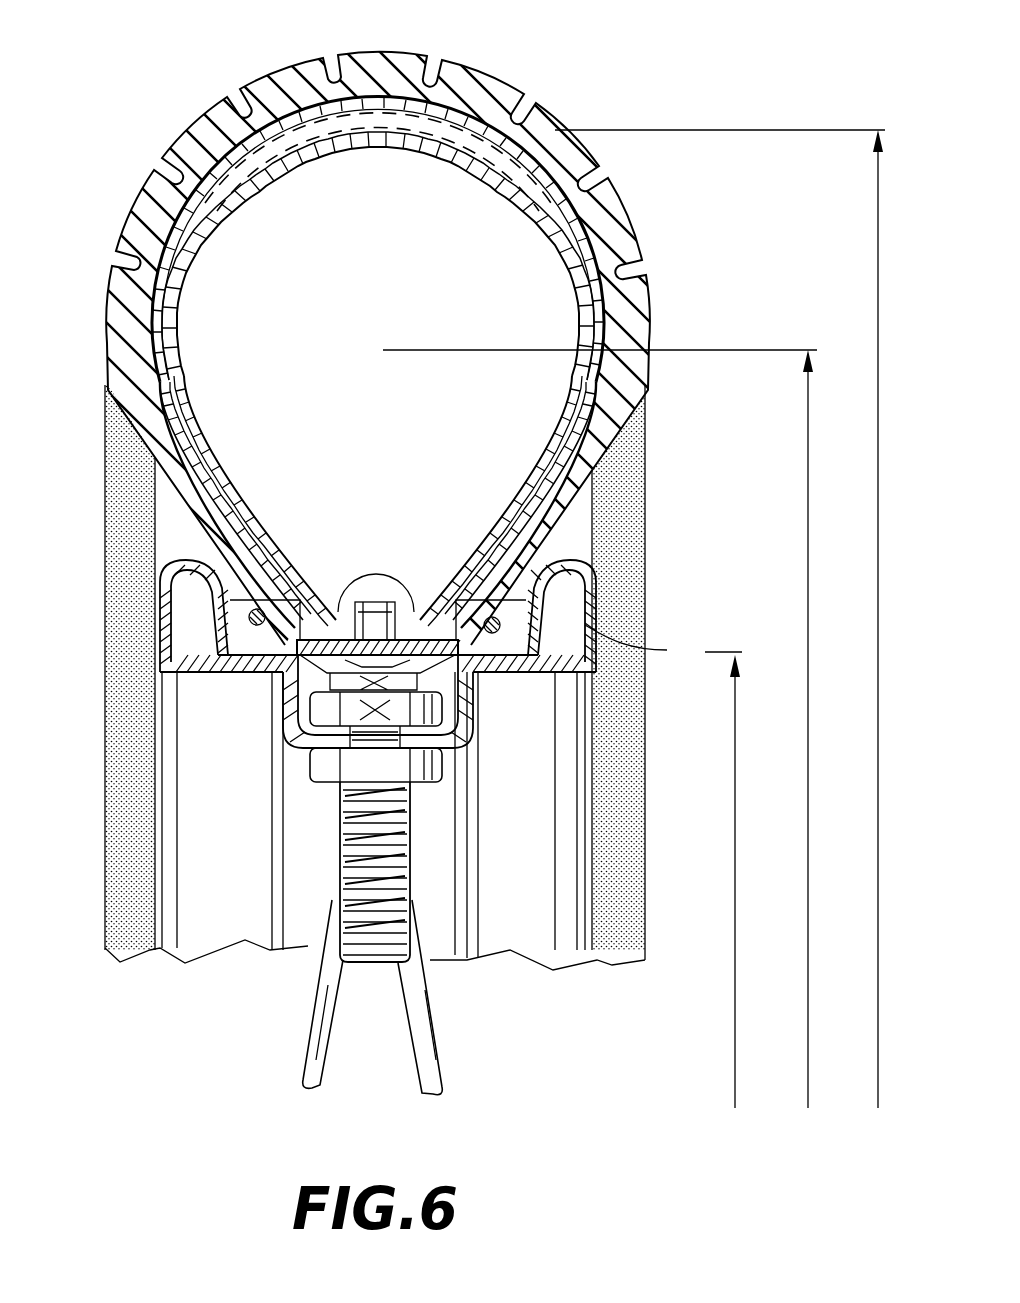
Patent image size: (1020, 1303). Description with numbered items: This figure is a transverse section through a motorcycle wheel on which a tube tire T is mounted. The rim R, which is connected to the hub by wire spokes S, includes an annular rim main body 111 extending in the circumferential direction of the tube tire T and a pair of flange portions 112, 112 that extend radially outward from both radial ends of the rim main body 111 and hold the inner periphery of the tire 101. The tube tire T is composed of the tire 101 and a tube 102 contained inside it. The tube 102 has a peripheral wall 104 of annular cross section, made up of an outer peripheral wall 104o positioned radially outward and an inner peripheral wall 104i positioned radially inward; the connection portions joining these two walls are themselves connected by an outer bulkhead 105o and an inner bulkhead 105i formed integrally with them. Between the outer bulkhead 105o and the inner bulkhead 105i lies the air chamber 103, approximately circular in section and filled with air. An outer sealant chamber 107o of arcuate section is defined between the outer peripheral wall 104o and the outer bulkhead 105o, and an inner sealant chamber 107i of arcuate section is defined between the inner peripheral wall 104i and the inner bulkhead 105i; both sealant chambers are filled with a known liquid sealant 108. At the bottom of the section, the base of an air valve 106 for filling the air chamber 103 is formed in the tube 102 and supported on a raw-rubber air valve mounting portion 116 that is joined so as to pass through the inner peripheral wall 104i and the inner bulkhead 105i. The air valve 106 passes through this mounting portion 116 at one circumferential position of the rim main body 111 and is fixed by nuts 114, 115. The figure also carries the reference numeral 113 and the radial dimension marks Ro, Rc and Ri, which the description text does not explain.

The tube tire T is at (590, 112).
The tire 101 is at (648, 318).
The tube 102 is at (614, 371).
The air chamber 103 is at (402, 345).
The peripheral wall 104 is at (273, 333).
The outer peripheral wall 104o is at (182, 350).
The inner peripheral wall 104i is at (226, 478).
The outer bulkhead 105o is at (493, 190).
The inner bulkhead 105i is at (543, 440).
The air valve 106 is at (340, 876).
The outer sealant chamber 107o is at (470, 133).
The inner sealant chamber 107i is at (470, 523).
The liquid sealant 108 is at (397, 98).
The rim main body 111 is at (228, 668).
The flange portions 112 is at (160, 565).
The rim well 113 is at (302, 732).
The nut 114 is at (430, 708).
The nut 115 is at (432, 762).
The air valve mounting portion 116 is at (356, 600).
The rim R is at (638, 647).
The outer radius Ro is at (740, 619).
The equator radius Rc is at (830, 729).
The inner radius Ri is at (738, 880).
The wire spokes S is at (426, 1060).